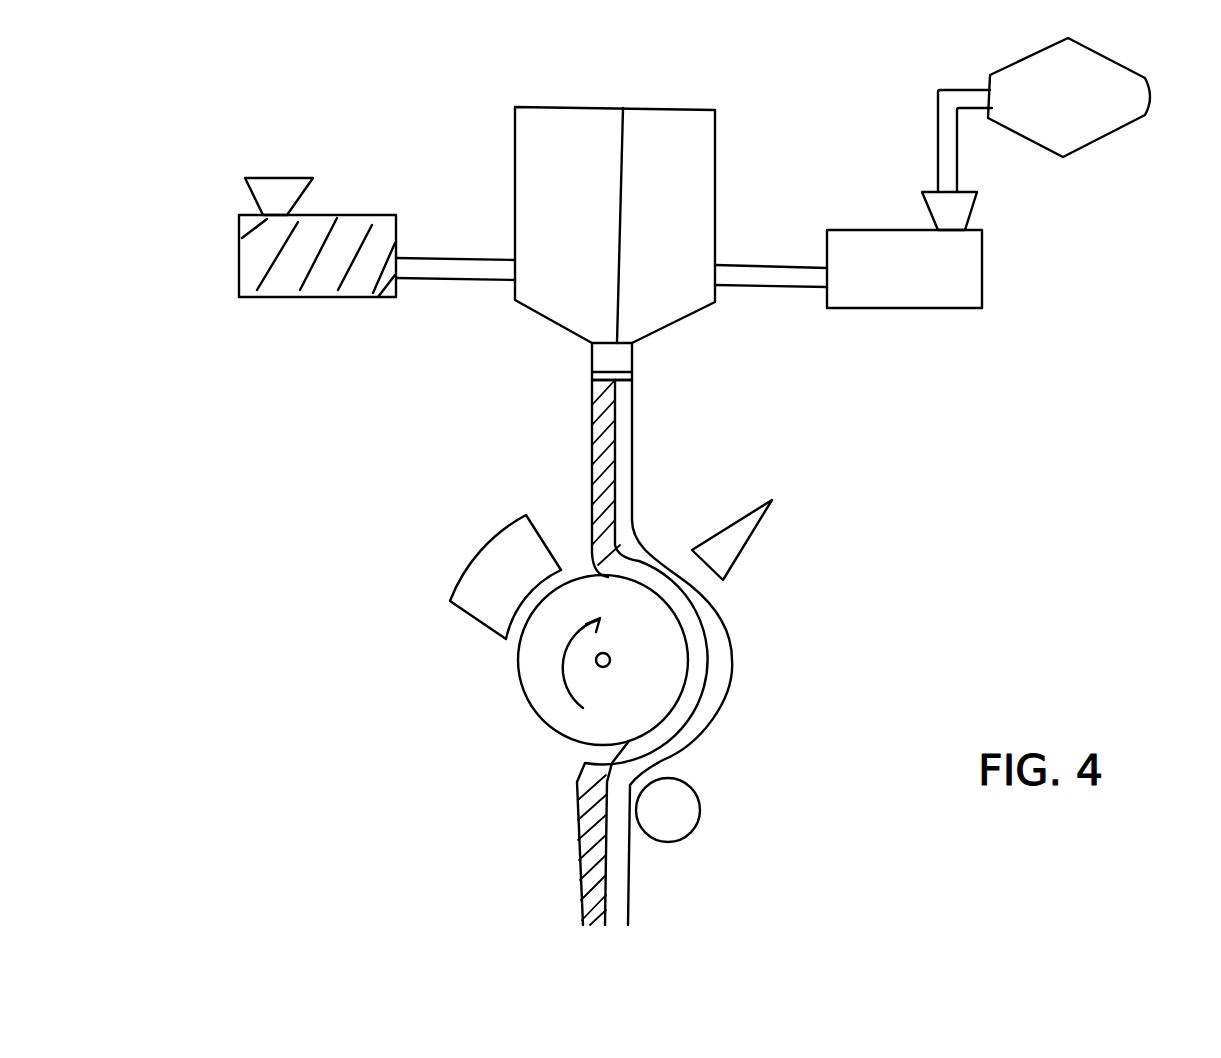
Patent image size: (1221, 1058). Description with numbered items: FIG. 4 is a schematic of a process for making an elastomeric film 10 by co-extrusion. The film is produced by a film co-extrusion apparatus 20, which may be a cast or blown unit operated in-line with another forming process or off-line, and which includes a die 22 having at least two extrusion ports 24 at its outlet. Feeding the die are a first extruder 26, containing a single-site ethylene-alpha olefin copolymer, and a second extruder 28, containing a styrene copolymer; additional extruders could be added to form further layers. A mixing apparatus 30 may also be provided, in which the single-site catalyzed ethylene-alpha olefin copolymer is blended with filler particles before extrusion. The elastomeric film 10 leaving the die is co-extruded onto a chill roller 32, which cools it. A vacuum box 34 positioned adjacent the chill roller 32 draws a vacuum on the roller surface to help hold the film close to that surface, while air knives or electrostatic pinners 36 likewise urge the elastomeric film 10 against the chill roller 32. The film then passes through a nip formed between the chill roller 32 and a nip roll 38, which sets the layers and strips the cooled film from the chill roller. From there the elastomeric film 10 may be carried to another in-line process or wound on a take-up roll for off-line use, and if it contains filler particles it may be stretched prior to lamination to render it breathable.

The elastomeric film 10 is at (568, 880).
The film co-extrusion apparatus 20 is at (728, 127).
The die 22 is at (636, 345).
The extrusion ports 24 is at (598, 372).
The first extruder 26 is at (983, 308).
The second extruder 28 is at (239, 297).
The mixing apparatus 30 is at (1146, 114).
The chill roller 32 is at (527, 692).
The vacuum box 34 is at (442, 605).
The air knives or electrostatic pinners 36 is at (755, 545).
The nip roll 38 is at (698, 820).